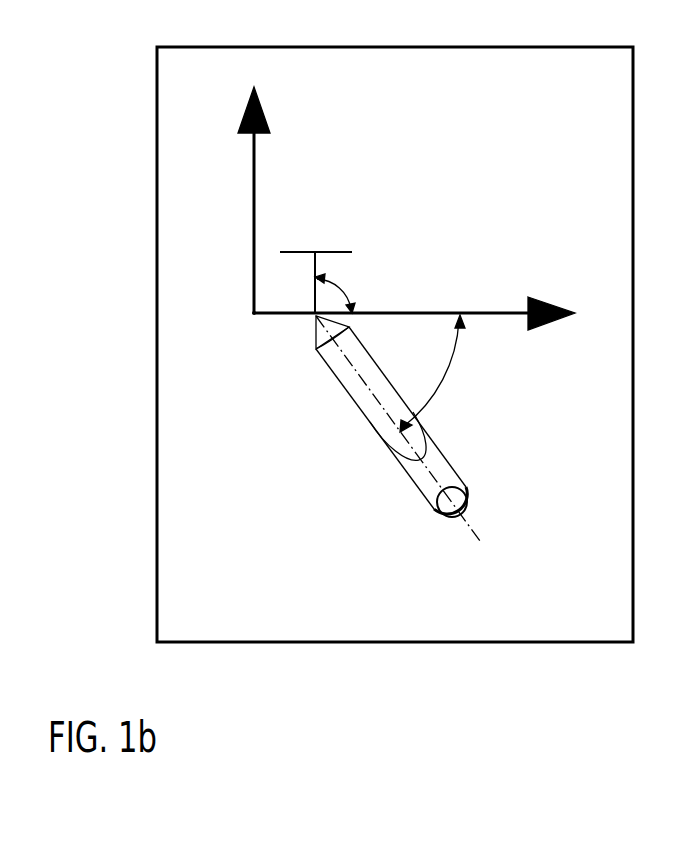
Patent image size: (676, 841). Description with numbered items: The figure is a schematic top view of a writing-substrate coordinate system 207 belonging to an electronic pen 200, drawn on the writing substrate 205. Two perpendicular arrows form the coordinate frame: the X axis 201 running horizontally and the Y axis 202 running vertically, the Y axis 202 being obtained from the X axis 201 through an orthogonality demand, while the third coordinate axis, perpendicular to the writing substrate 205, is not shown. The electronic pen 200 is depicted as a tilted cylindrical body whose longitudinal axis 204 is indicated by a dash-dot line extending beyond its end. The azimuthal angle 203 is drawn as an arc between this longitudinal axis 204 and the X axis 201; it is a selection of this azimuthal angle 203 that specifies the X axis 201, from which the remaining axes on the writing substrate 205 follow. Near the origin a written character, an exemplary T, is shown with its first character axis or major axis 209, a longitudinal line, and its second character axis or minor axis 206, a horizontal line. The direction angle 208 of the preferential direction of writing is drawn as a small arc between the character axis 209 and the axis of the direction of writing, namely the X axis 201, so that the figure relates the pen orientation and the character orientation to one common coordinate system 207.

The electronic pen 200 is at (445, 450).
The X axis 201 is at (547, 305).
The Y axis 202 is at (262, 117).
The azimuthal angle ε 203 is at (440, 385).
The longitudinal axis 204 is at (470, 525).
The writing substrate 205 is at (598, 103).
The minor axis 206 is at (334, 250).
The writing-substrate coordinate system 207 is at (252, 322).
The direction angle η 208 is at (349, 300).
The major axis 209 is at (315, 290).